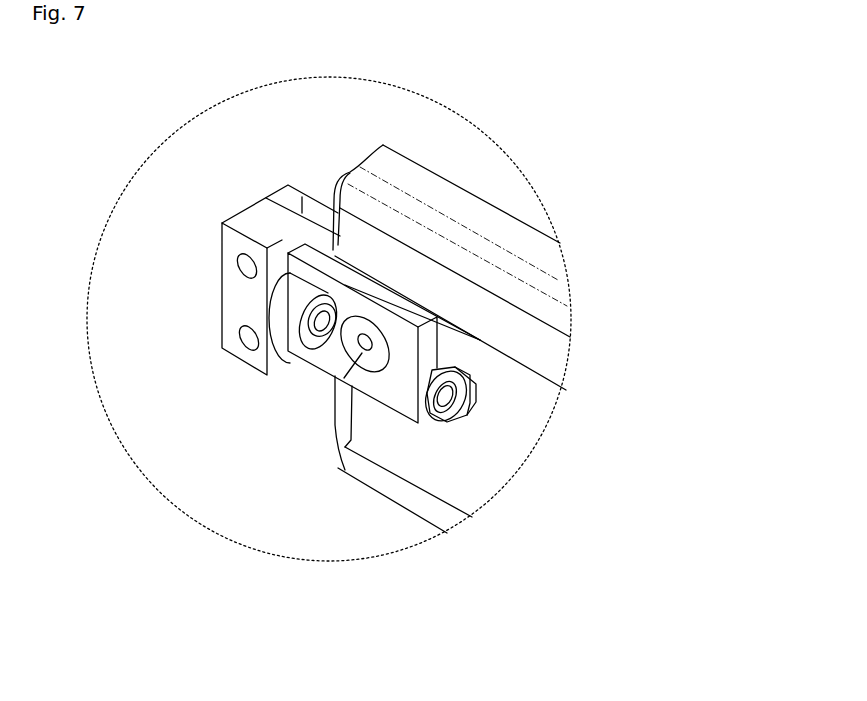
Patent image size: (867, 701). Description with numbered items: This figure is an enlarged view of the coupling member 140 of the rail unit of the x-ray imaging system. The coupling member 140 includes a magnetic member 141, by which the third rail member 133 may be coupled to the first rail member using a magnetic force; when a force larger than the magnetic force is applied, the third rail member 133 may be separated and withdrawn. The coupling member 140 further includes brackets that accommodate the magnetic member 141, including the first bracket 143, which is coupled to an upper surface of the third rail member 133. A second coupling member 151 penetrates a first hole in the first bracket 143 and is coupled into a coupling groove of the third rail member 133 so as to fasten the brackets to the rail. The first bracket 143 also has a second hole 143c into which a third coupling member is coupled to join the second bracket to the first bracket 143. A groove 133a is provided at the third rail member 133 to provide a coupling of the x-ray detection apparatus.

The third rail member 133 is at (472, 464).
The groove 133a is at (432, 423).
The coupling member 140 is at (241, 205).
The magnetic member 141 is at (312, 333).
The first bracket 143 is at (216, 322).
The second hole 143c is at (240, 262).
The second coupling member 151 is at (340, 470).